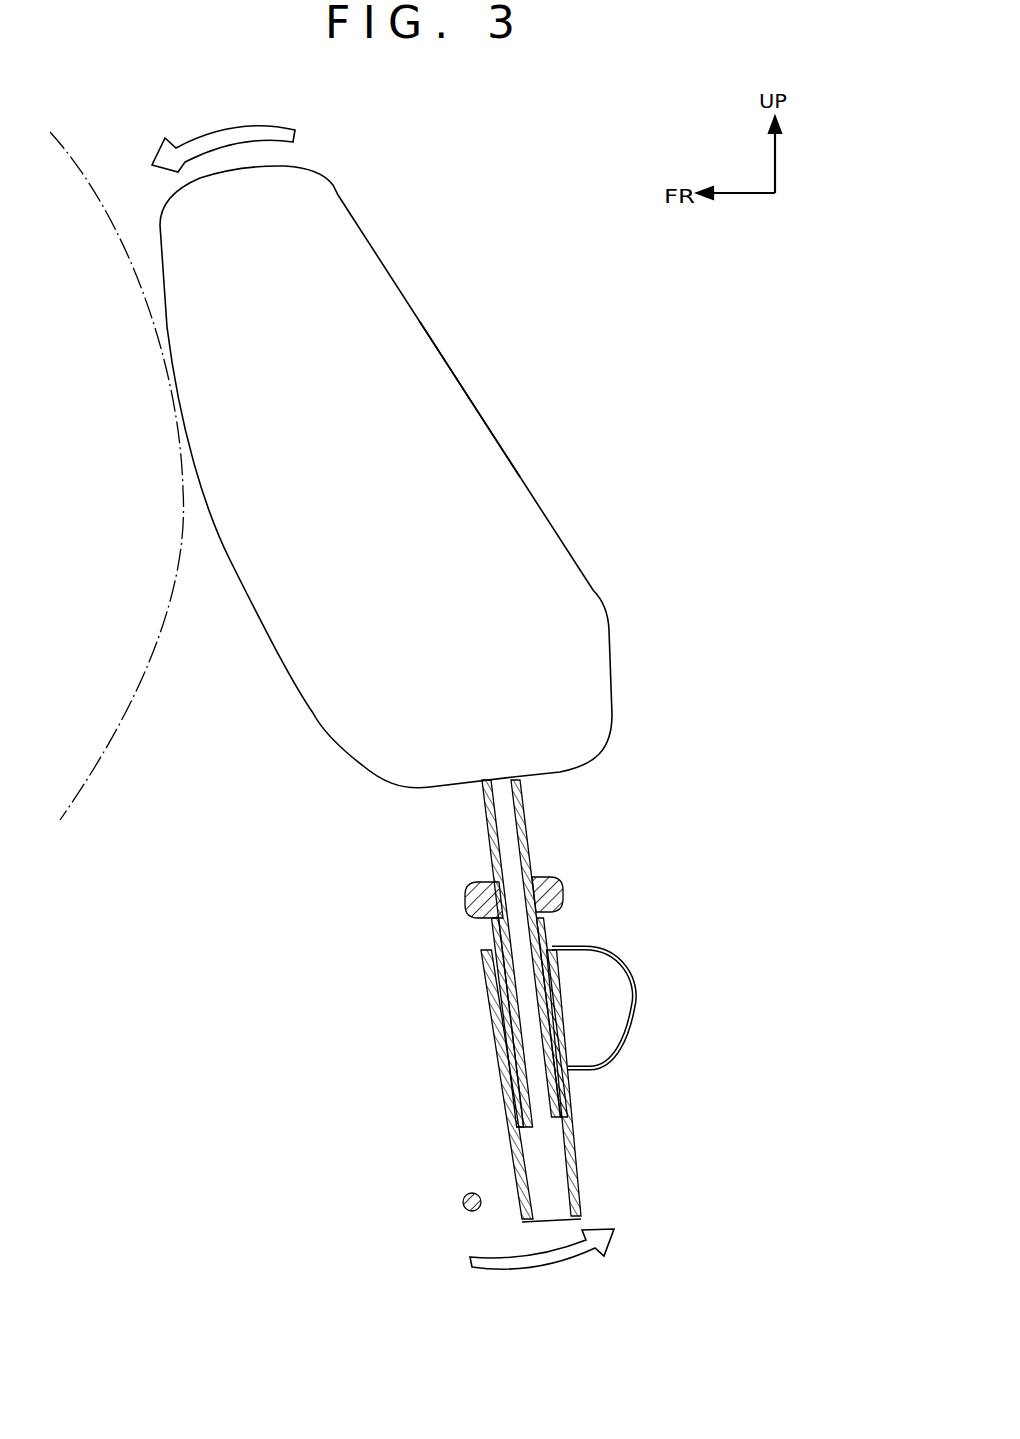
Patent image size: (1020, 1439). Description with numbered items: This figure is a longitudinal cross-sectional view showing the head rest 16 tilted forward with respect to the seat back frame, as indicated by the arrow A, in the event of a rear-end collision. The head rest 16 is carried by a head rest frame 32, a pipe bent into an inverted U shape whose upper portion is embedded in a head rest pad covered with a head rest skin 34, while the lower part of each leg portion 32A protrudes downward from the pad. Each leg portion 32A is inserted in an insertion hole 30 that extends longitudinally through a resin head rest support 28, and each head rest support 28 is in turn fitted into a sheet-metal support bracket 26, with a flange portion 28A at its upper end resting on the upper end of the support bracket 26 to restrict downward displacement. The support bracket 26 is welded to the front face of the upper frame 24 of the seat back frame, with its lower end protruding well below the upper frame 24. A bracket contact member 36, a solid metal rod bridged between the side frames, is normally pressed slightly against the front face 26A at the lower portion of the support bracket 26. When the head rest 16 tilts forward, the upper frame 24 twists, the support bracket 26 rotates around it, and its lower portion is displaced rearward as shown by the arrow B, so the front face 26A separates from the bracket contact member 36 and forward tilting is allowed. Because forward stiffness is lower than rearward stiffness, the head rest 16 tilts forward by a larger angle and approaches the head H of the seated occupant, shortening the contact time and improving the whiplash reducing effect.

The head rest 16 is at (434, 332).
The head rest skin 34 is at (487, 423).
The head rest frame 32 is at (481, 815).
The leg portion 32A is at (527, 815).
The head rest support 28 is at (494, 962).
The flange portion 28A is at (562, 892).
The insertion hole 30 is at (514, 993).
The support bracket 26 is at (584, 1150).
The front face 26A is at (514, 1138).
The upper frame 24 is at (628, 980).
The bracket contact member 36 is at (463, 1200).
The head of the seated occupant H is at (67, 148).
The arrow A is at (222, 124).
The arrow B is at (557, 1267).